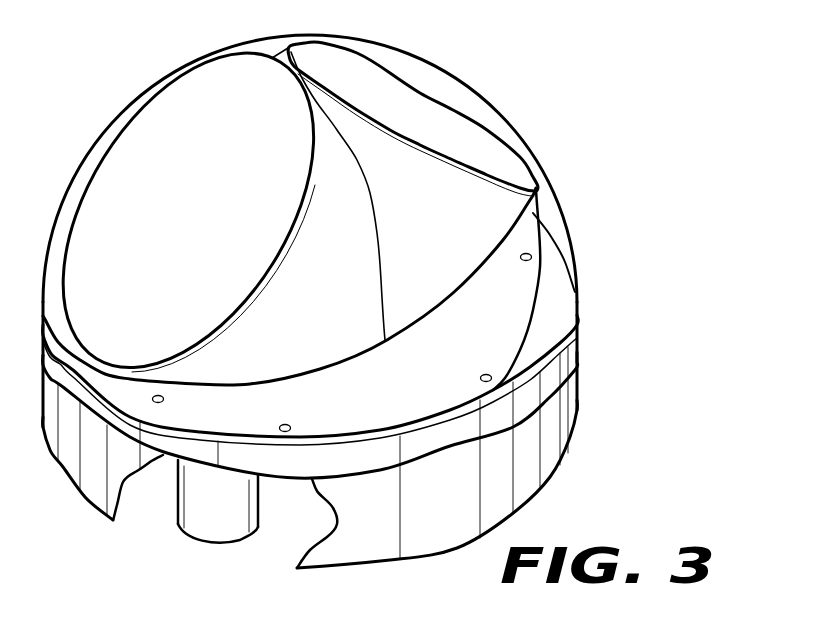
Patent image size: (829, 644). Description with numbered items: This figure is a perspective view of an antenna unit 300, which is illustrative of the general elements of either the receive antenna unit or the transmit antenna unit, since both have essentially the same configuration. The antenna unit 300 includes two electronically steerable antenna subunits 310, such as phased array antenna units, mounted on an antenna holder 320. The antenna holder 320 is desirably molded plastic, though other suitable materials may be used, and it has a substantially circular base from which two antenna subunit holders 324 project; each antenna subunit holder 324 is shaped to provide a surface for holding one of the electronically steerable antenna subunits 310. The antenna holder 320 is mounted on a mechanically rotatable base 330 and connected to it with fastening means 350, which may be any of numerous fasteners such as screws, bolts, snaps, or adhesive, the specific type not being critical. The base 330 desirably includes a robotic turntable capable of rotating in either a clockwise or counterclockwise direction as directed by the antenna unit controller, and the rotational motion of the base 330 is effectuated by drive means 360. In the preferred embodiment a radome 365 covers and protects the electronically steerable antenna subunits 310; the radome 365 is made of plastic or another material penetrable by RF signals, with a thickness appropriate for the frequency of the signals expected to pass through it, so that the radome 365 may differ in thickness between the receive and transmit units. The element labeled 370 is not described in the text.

The antenna unit 300 is at (324, 288).
The electronically steerable antenna subunit 310 is at (203, 228).
The antenna holder 320 is at (411, 402).
The antenna subunit holder 324 is at (328, 316).
The mechanically rotatable base 330 is at (460, 524).
The fastening means 350 is at (485, 372).
The drive means 360 is at (168, 464).
The radome 365 is at (121, 110).
The cylindrical boss 370 is at (261, 508).